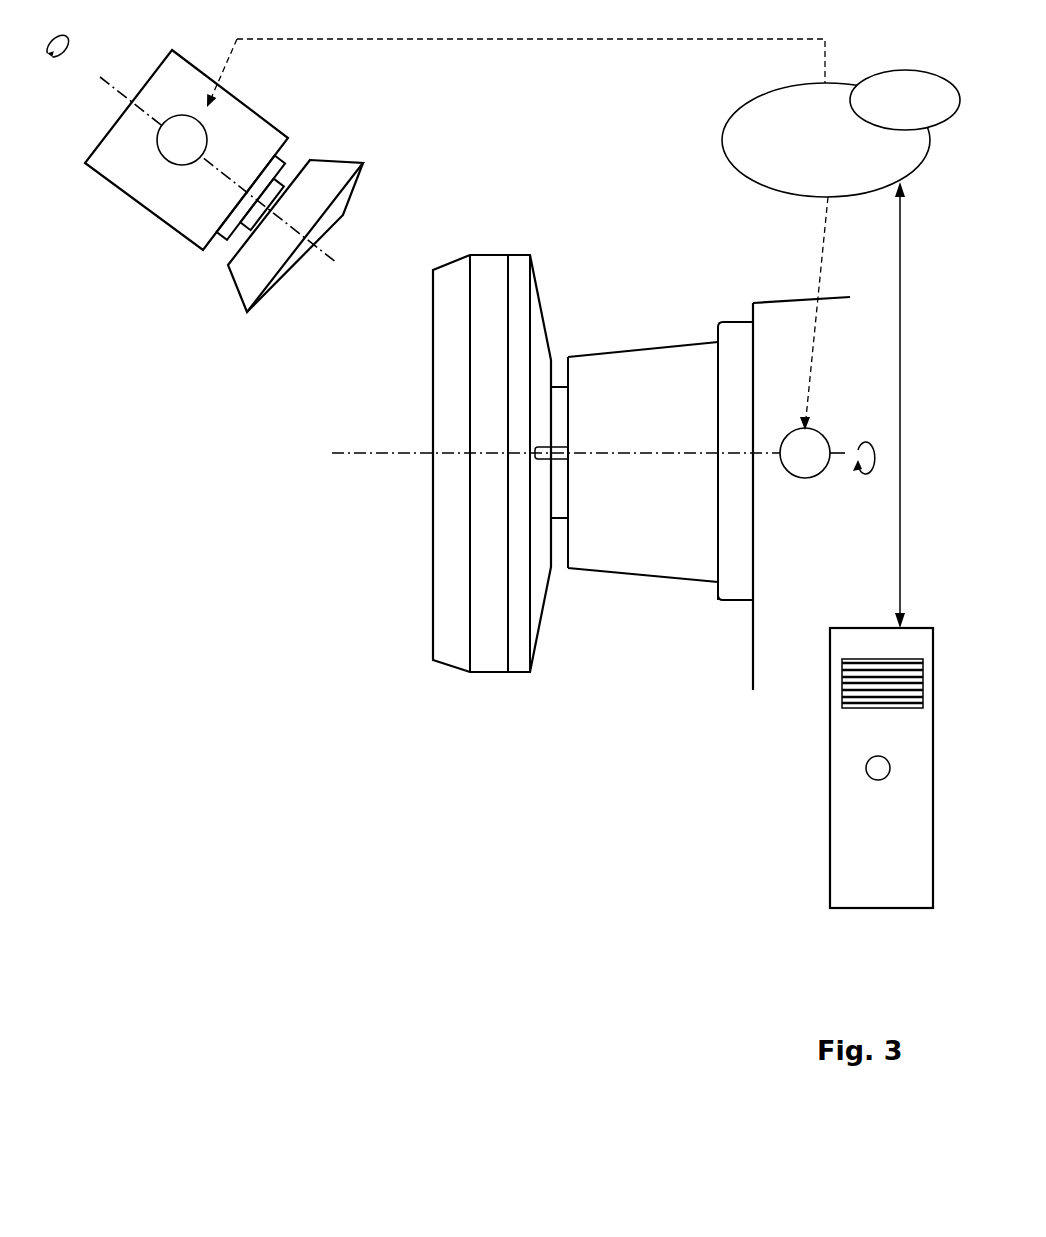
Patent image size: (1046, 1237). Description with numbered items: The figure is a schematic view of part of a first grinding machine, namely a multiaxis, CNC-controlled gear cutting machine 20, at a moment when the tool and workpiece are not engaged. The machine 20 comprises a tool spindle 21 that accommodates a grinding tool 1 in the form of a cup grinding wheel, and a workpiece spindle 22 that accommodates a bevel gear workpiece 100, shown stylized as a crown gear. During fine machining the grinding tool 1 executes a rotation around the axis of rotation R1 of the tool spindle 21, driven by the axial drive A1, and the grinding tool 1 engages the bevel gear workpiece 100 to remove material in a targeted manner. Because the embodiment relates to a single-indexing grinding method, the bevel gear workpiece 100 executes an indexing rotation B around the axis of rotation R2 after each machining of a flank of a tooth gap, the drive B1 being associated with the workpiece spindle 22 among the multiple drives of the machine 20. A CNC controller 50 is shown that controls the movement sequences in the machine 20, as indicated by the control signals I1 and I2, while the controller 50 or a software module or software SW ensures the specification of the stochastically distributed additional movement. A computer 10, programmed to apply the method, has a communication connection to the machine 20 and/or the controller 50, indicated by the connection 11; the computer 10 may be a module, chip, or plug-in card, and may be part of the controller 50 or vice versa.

The grinding tool 1 is at (478, 673).
The computer 10 is at (873, 898).
The connection 11 is at (904, 313).
The gear cutting machine 20 is at (529, 133).
The tool spindle 21 is at (657, 568).
The workpiece spindle 22 is at (253, 121).
The CNC controller 50 is at (812, 149).
The bevel gear workpiece 100 is at (335, 165).
The software SW is at (905, 100).
The control signal I1 is at (516, 58).
The control signal I2 is at (828, 313).
The axial drive A1 is at (805, 453).
The drive B1 is at (182, 140).
The axis of rotation R1 is at (571, 453).
The axis of rotation R2 is at (203, 160).
The indexing rotation B is at (57, 31).